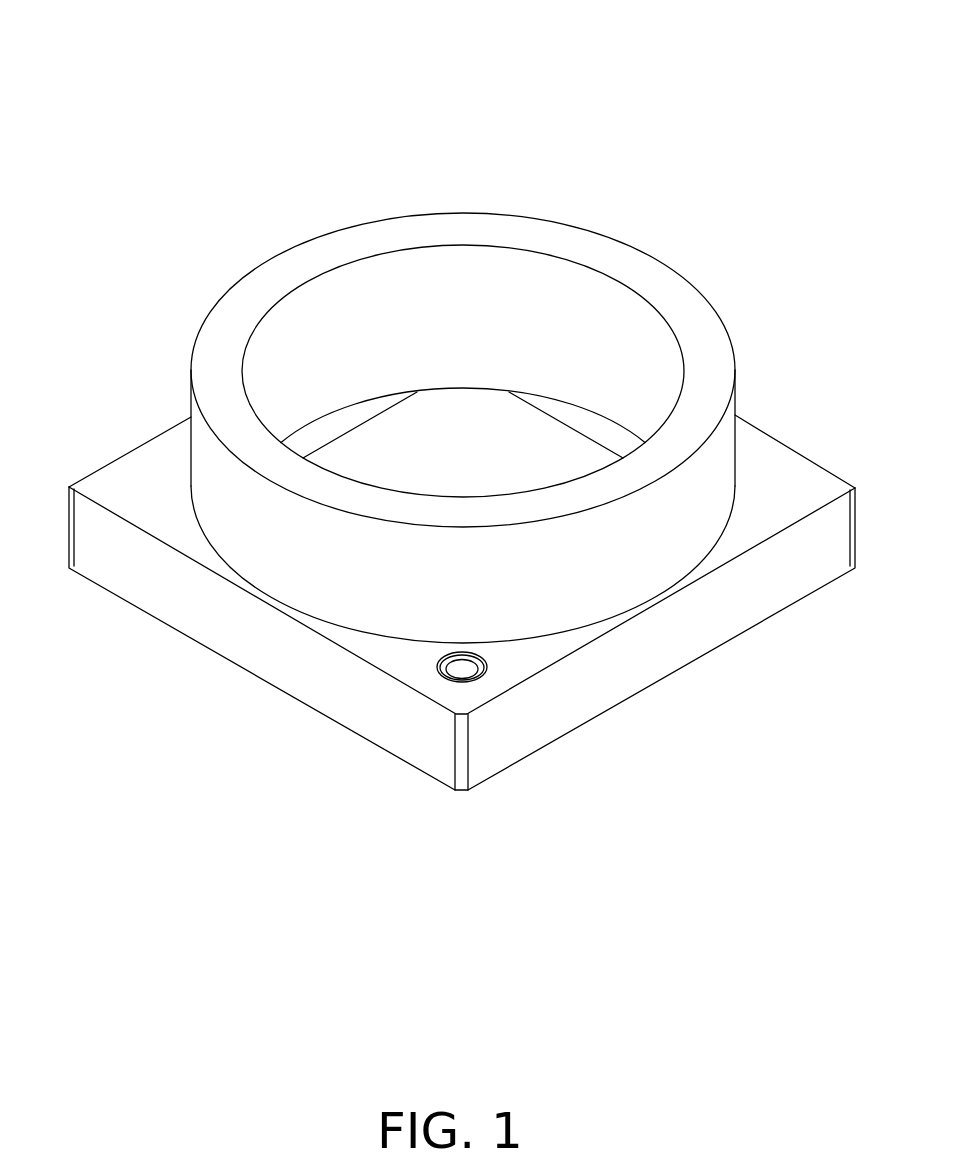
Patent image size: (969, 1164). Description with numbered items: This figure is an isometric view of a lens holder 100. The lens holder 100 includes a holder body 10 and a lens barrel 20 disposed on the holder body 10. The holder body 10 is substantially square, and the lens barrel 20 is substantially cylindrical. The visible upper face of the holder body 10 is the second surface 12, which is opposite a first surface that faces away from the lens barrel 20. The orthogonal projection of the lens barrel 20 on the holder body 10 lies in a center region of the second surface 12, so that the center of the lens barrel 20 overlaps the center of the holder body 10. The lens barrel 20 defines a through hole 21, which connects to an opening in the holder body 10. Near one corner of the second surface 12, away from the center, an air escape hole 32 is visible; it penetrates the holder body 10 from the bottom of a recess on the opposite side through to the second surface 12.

The lens holder 100 is at (422, 37).
The holder body 10 is at (212, 632).
The second surface 12 is at (381, 657).
The lens barrel 20 is at (288, 274).
The through hole 21 is at (540, 315).
The air escape hole 32 is at (449, 676).